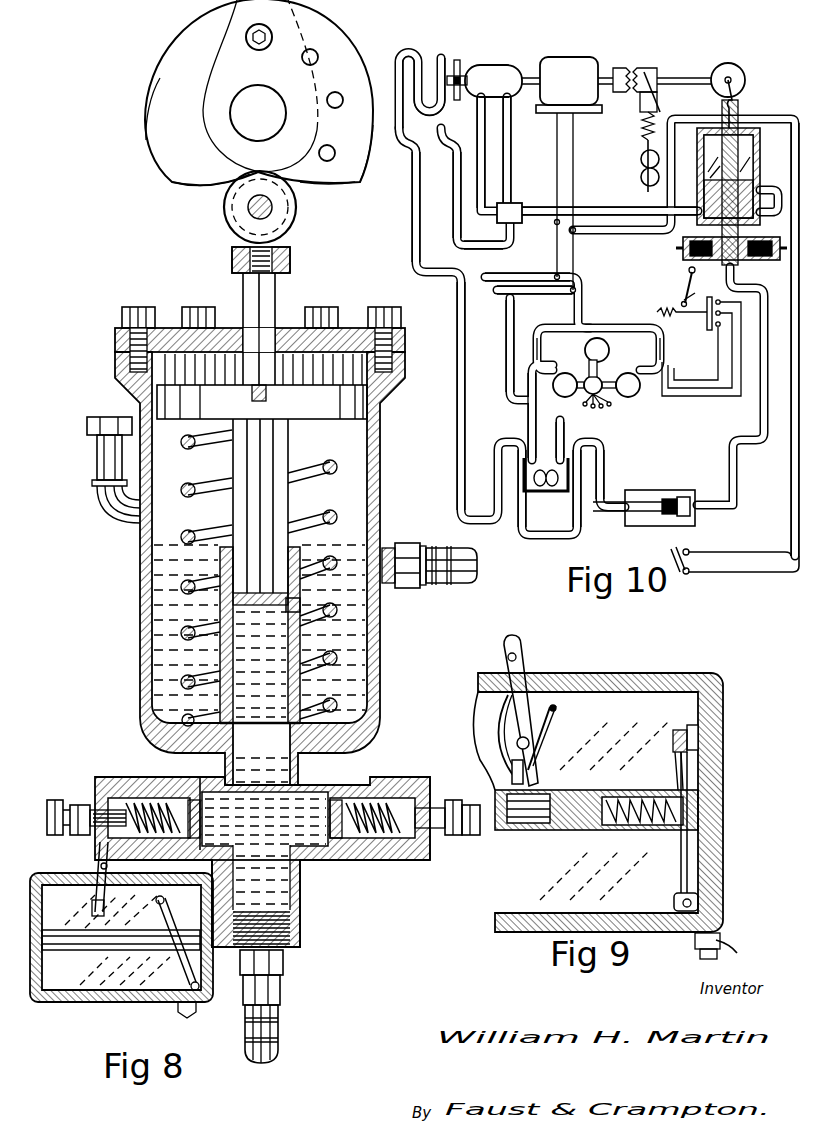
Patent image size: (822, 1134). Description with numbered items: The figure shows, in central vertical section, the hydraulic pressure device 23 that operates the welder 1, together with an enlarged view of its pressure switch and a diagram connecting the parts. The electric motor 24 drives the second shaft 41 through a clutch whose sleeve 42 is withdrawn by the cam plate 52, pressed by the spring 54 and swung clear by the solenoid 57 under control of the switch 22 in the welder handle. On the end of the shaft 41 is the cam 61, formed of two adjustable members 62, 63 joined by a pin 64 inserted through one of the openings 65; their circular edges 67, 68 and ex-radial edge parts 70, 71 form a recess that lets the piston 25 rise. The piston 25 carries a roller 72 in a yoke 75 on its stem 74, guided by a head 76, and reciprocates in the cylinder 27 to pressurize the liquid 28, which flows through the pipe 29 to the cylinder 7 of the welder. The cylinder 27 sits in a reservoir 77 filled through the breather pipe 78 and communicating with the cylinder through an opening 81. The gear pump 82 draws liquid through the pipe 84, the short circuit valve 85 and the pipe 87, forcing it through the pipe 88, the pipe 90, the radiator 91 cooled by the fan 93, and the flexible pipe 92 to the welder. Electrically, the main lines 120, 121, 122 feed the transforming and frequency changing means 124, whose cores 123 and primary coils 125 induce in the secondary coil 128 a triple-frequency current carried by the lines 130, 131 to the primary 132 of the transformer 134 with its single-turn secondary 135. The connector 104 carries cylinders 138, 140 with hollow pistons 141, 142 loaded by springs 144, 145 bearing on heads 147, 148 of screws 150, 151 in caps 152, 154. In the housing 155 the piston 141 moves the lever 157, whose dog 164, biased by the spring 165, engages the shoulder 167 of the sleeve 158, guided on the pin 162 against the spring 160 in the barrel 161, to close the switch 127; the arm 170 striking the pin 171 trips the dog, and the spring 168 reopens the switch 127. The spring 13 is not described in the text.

In FIG. 10, the welder 1 is at (602, 478).
In FIG. 10, the cylinder 7 is at (657, 494).
In FIG. 8, the spring 13 is at (337, 463).
In FIG. 10, the switch 22 is at (681, 574).
In FIG. 8, the hydraulic pressure device 23 is at (377, 521).
In FIG. 10, the electric motor 24 is at (570, 68).
In FIG. 8, the piston 25 is at (268, 503).
In FIG. 8, the cylinder 27 is at (298, 642).
In FIG. 8, the liquid 28 is at (300, 693).
In FIG. 8, the pipe 29 is at (283, 1030).
In FIG. 10, the pipe 29 is at (755, 437).
In FIG. 8, the second shaft 41 is at (245, 110).
In FIG. 10, the sleeve 42 is at (645, 70).
In FIG. 10, the cam plate 52 is at (642, 102).
In FIG. 10, the spring 54 is at (642, 128).
In FIG. 10, the solenoid 57 is at (640, 160).
In FIG. 8, the cam 61 is at (172, 114).
In FIG. 10, the cam 61 is at (743, 72).
In FIG. 8, the cam member 62 is at (340, 177).
In FIG. 8, the cam member 63 is at (178, 151).
In FIG. 8, the pin 64 is at (246, 36).
In FIG. 8, the openings 65 is at (317, 52).
In FIG. 8, the circular edge 67 is at (147, 143).
In FIG. 8, the circular edge 68 is at (362, 168).
In FIG. 8, the edge part 70 is at (214, 180).
In FIG. 8, the edge part 71 is at (306, 185).
In FIG. 8, the roller 72 is at (275, 213).
In FIG. 8, the stem 74 is at (277, 297).
In FIG. 8, the yoke 75 is at (292, 258).
In FIG. 8, the head 76 is at (337, 405).
In FIG. 8, the reservoir 77 is at (348, 652).
In FIG. 8, the pipe 78 is at (108, 462).
In FIG. 8, the opening 81 is at (302, 607).
In FIG. 10, the gear pump 82 is at (496, 73).
In FIG. 8, the pipe 84 is at (472, 576).
In FIG. 10, the pipe 84 is at (602, 207).
In FIG. 10, the short circuit valve 85 is at (512, 208).
In FIG. 10, the pipe 87 is at (480, 200).
In FIG. 10, the pipe 88 is at (512, 132).
In FIG. 10, the pipe 90 is at (454, 176).
In FIG. 10, the radiator 91 is at (440, 50).
In FIG. 10, the flexible pipe 92 is at (421, 225).
In FIG. 10, the fan 93 is at (461, 66).
In FIG. 8, the connector 104 is at (303, 879).
In FIG. 10, the connector 104 is at (740, 266).
In FIG. 10, the main line 120 is at (500, 300).
In FIG. 10, the main line 121 is at (515, 289).
In FIG. 10, the main line 122 is at (500, 283).
In FIG. 10, the cores 123 is at (604, 342).
In FIG. 10, the transforming and frequency changing means 124 is at (600, 380).
In FIG. 10, the primary coils 125 is at (600, 340).
In FIG. 8, the switch 127 is at (185, 968).
In FIG. 10, the switch 127 is at (708, 320).
In FIG. 9, the switch 127 is at (690, 846).
In FIG. 10, the secondary coil 128 is at (585, 398).
In FIG. 10, the line 130 is at (530, 430).
In FIG. 10, the line 131 is at (561, 431).
In FIG. 10, the primary 132 is at (545, 488).
In FIG. 10, the transformer 134 is at (535, 500).
In FIG. 10, the secondary 135 is at (562, 512).
In FIG. 8, the cylinder 138 is at (212, 786).
In FIG. 8, the cylinder 140 is at (352, 786).
In FIG. 8, the piston 141 is at (140, 790).
In FIG. 8, the piston 142 is at (365, 790).
In FIG. 8, the spring 144 is at (165, 800).
In FIG. 8, the spring 145 is at (392, 782).
In FIG. 8, the head 147 is at (72, 800).
In FIG. 8, the head 148 is at (440, 810).
In FIG. 8, the screw 150 is at (90, 840).
In FIG. 8, the screw 151 is at (462, 838).
In FIG. 8, the cap 152 is at (112, 779).
In FIG. 8, the cap 154 is at (412, 782).
In FIG. 8, the housing 155 is at (100, 992).
In FIG. 9, the housing 155 is at (645, 678).
In FIG. 8, the lever 157 is at (100, 866).
In FIG. 10, the lever 157 is at (690, 290).
In FIG. 9, the lever 157 is at (530, 672).
In FIG. 8, the sleeve 158 is at (110, 945).
In FIG. 9, the sleeve 158 is at (549, 832).
In FIG. 9, the spring 160 is at (640, 797).
In FIG. 9, the barrel 161 is at (681, 828).
In FIG. 9, the pin 162 is at (542, 790).
In FIG. 9, the dog 164 is at (513, 762).
In FIG. 9, the spring 165 is at (500, 720).
In FIG. 9, the shoulder 167 is at (530, 745).
In FIG. 9, the spring 168 is at (694, 896).
In FIG. 9, the arm 170 is at (565, 690).
In FIG. 9, the pin 171 is at (556, 706).